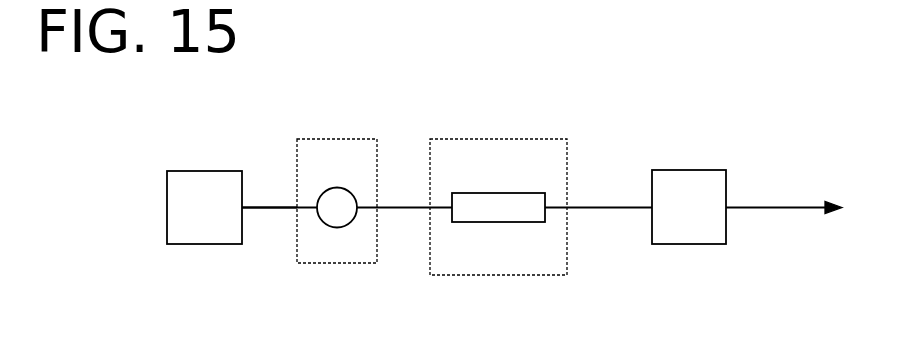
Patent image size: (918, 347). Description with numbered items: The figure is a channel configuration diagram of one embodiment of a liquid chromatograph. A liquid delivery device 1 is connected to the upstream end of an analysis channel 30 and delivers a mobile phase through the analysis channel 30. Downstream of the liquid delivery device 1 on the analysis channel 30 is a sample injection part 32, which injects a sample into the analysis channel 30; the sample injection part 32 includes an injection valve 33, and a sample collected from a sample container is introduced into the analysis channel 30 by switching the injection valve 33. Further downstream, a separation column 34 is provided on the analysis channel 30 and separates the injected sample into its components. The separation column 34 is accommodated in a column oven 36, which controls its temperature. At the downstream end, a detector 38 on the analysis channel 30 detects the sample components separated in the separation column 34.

The liquid delivery device 1 is at (183, 170).
The analysis channel 30 is at (271, 206).
The sample injection part 32 is at (355, 138).
The injection valve 33 is at (340, 228).
The separation column 34 is at (493, 192).
The column oven 36 is at (533, 138).
The detector 38 is at (688, 168).